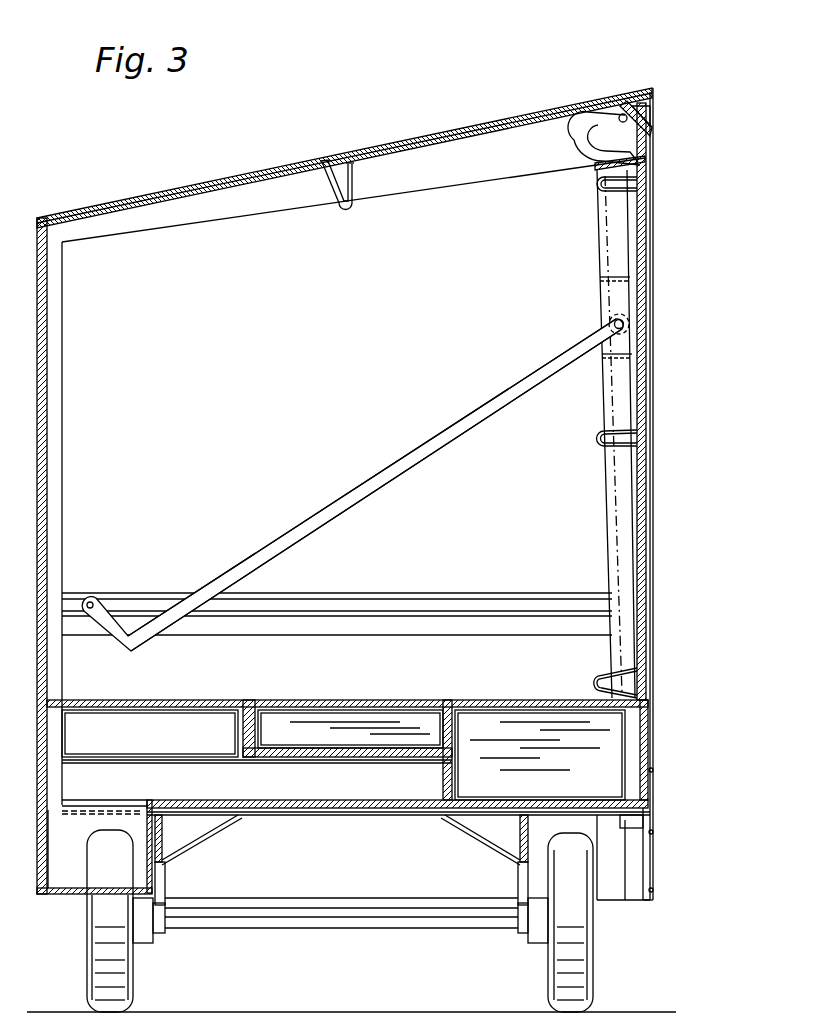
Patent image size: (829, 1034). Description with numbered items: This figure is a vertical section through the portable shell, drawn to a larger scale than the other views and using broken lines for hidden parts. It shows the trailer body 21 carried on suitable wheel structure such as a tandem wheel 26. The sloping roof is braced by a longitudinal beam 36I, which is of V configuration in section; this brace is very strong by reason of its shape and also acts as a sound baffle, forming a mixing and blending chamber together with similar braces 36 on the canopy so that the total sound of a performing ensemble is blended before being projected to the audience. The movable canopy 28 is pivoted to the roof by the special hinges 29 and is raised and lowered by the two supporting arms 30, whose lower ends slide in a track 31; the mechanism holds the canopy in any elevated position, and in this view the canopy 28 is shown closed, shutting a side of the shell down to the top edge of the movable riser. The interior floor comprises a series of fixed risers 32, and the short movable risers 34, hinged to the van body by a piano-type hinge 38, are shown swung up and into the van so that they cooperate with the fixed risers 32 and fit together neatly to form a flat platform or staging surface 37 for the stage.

The trailer body 21 is at (64, 321).
The tandem wheel 26 is at (113, 983).
The movable canopy 28 is at (650, 470).
The special hinges 29 is at (580, 141).
The supporting arms 30 is at (423, 451).
The track 31 is at (137, 604).
The fixed risers 32 is at (208, 698).
The movable risers 34 is at (648, 722).
The braces 36 is at (598, 182).
The longitudinal beam 36I is at (354, 182).
The flat platform or staging surface 37 is at (336, 696).
The piano-type hinge 38 is at (652, 833).